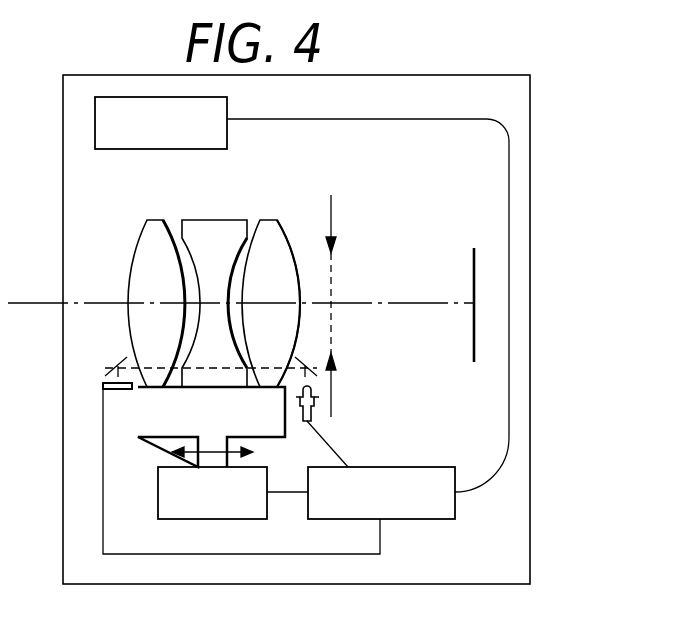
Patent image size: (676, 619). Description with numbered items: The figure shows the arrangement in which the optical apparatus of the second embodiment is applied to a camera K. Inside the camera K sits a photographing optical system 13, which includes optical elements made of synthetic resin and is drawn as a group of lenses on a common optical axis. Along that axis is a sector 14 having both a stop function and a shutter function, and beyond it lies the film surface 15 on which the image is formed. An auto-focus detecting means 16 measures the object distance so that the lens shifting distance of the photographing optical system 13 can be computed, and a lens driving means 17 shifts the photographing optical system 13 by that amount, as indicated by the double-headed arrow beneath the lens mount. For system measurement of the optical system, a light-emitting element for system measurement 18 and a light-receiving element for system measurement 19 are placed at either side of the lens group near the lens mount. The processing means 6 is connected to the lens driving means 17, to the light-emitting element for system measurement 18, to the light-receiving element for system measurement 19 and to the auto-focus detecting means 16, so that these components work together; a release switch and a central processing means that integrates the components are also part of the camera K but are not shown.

The camera K is at (531, 157).
The auto-focus detecting means 16 is at (127, 150).
The photographing optical system 13 is at (293, 209).
The sector 14 is at (333, 215).
The film surface 15 is at (473, 342).
The light-receiving element for system measurement 19 is at (122, 391).
The light-emitting element for system measurement 18 is at (310, 412).
The lens driving means 17 is at (227, 520).
The processing means 6 is at (425, 520).